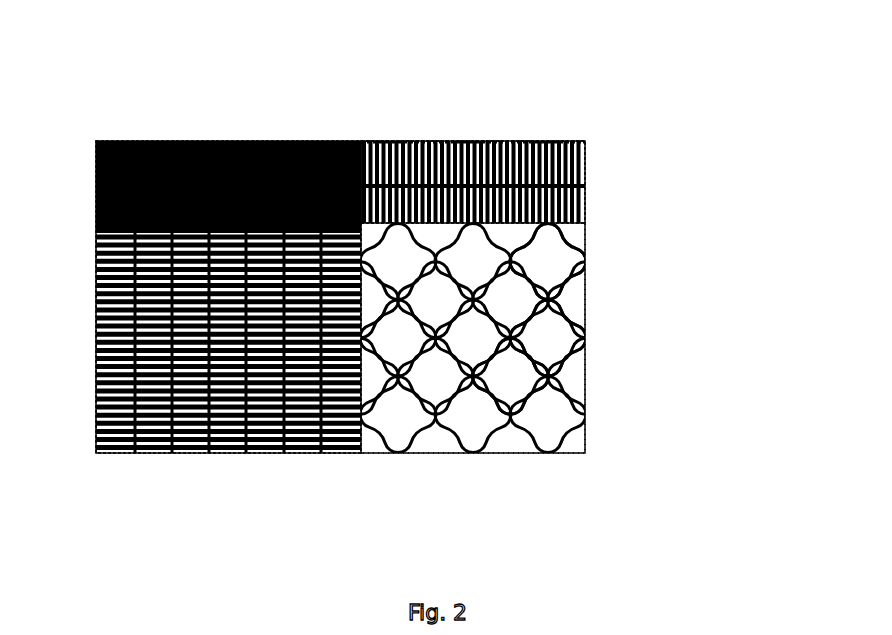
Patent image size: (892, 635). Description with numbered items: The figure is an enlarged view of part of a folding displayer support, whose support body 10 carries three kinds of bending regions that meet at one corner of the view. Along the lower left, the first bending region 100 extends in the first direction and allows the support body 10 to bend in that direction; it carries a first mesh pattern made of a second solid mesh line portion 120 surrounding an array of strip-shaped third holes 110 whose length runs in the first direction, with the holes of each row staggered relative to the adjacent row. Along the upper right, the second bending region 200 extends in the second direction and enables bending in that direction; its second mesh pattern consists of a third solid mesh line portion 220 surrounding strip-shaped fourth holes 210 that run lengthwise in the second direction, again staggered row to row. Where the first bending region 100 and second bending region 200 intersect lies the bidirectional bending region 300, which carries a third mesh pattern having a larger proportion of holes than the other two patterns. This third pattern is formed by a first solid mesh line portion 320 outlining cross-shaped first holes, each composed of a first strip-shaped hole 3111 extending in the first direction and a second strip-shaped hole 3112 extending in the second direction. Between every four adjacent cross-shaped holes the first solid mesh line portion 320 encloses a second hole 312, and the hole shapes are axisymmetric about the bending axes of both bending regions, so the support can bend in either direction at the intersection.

The support body 10 is at (110, 130).
The first bending region 100 is at (205, 505).
The third holes 110 is at (230, 447).
The second solid mesh line portion 120 is at (163, 447).
The second bending region 200 is at (632, 54).
The fourth holes 210 is at (578, 133).
The third solid mesh line portion 220 is at (483, 131).
The bidirectional bending region 300 is at (772, 298).
The first solid mesh line portion 320 is at (557, 277).
The first strip-shaped hole 3111 is at (567, 338).
The second strip-shaped hole 3112 is at (540, 350).
The second holes 312 is at (510, 373).